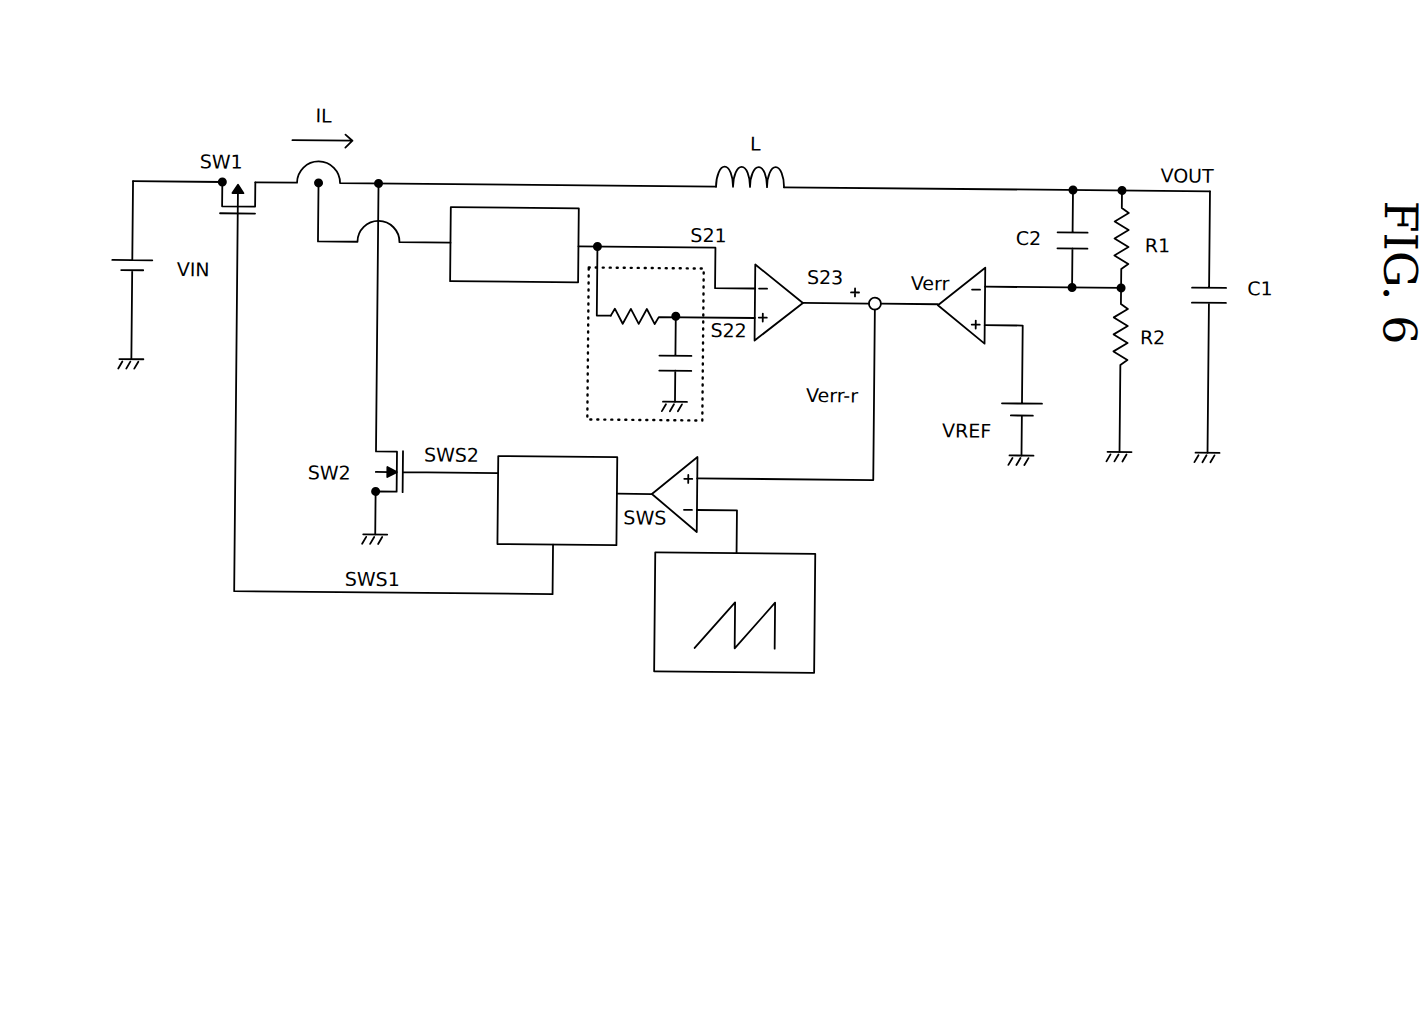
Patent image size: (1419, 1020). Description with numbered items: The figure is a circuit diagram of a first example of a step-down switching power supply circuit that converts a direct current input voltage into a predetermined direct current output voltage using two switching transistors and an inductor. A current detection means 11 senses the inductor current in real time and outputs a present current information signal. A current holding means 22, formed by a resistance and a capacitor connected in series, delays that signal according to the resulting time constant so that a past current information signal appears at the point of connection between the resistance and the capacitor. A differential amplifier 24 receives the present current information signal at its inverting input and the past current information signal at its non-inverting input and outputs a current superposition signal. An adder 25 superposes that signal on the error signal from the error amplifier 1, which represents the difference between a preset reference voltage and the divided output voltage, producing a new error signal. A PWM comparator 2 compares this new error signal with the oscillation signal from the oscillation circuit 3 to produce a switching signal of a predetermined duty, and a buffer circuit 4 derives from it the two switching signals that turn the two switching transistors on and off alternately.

The current detection means 11 is at (478, 212).
The current holding means 22 is at (656, 265).
The differential amplifier 24 is at (783, 302).
The adder 25 is at (876, 296).
The error amplifier 1 is at (961, 283).
The PWM comparator 2 is at (670, 495).
The oscillation circuit 3 is at (657, 651).
The buffer circuit 4 is at (519, 546).